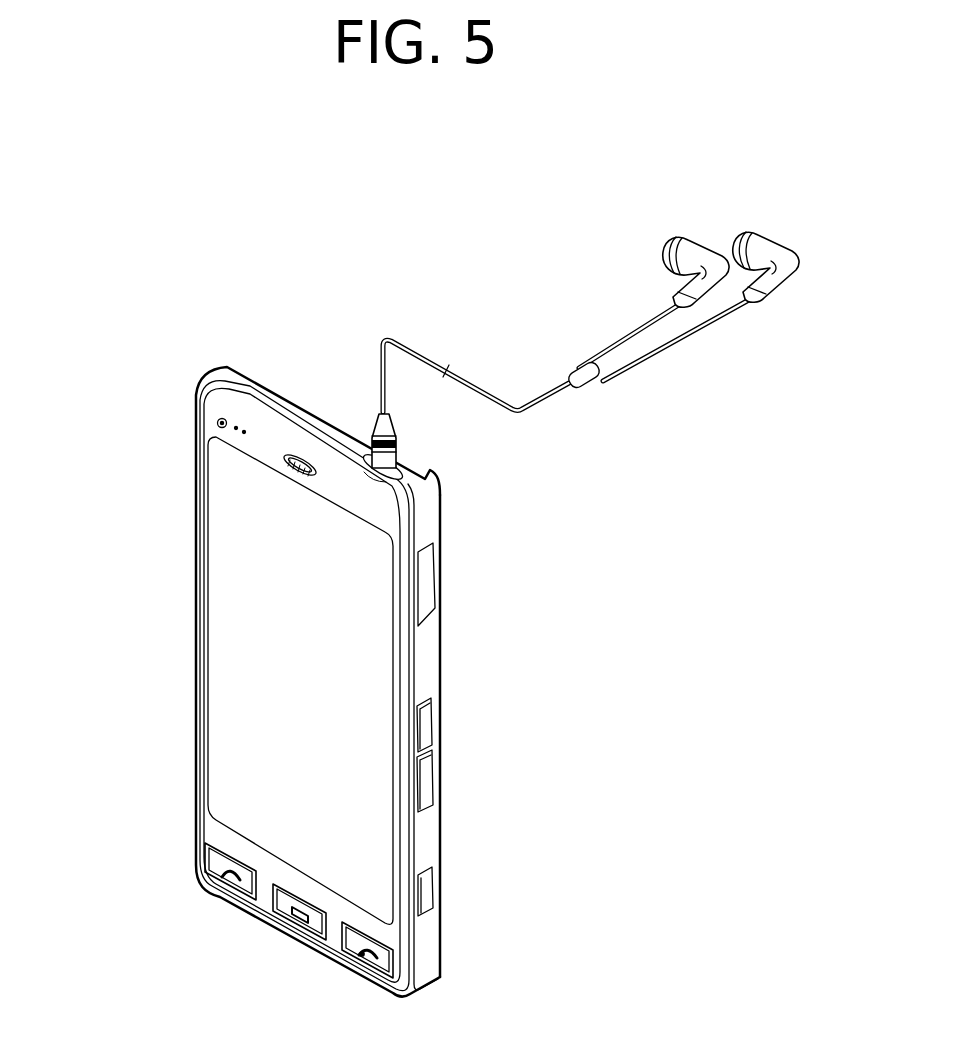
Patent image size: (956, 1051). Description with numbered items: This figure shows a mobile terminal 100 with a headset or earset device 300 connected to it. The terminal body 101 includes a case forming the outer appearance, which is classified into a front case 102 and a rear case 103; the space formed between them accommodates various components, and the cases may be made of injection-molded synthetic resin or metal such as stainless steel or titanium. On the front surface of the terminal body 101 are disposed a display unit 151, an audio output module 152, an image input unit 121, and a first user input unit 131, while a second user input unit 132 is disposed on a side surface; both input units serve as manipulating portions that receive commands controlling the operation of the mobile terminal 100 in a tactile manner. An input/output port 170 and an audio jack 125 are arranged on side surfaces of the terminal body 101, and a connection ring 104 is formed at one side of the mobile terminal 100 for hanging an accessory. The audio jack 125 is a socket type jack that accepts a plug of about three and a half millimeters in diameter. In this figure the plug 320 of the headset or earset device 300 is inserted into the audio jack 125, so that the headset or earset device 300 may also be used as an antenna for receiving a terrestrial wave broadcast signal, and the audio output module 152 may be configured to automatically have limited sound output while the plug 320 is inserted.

The mobile terminal 100 is at (112, 361).
The terminal body 101 is at (289, 381).
The front case 102 is at (414, 640).
The rear case 103 is at (434, 682).
The connection ring 104 is at (222, 373).
The image input unit 121 is at (217, 426).
The audio jack 125 is at (404, 473).
The first user input unit 131 is at (212, 862).
The second user input unit 132 is at (427, 772).
The display unit 151 is at (213, 598).
The audio output module 152 is at (284, 464).
The input/output port 170 is at (428, 580).
The headset or earset device 300 is at (597, 304).
The plug 320 is at (397, 440).